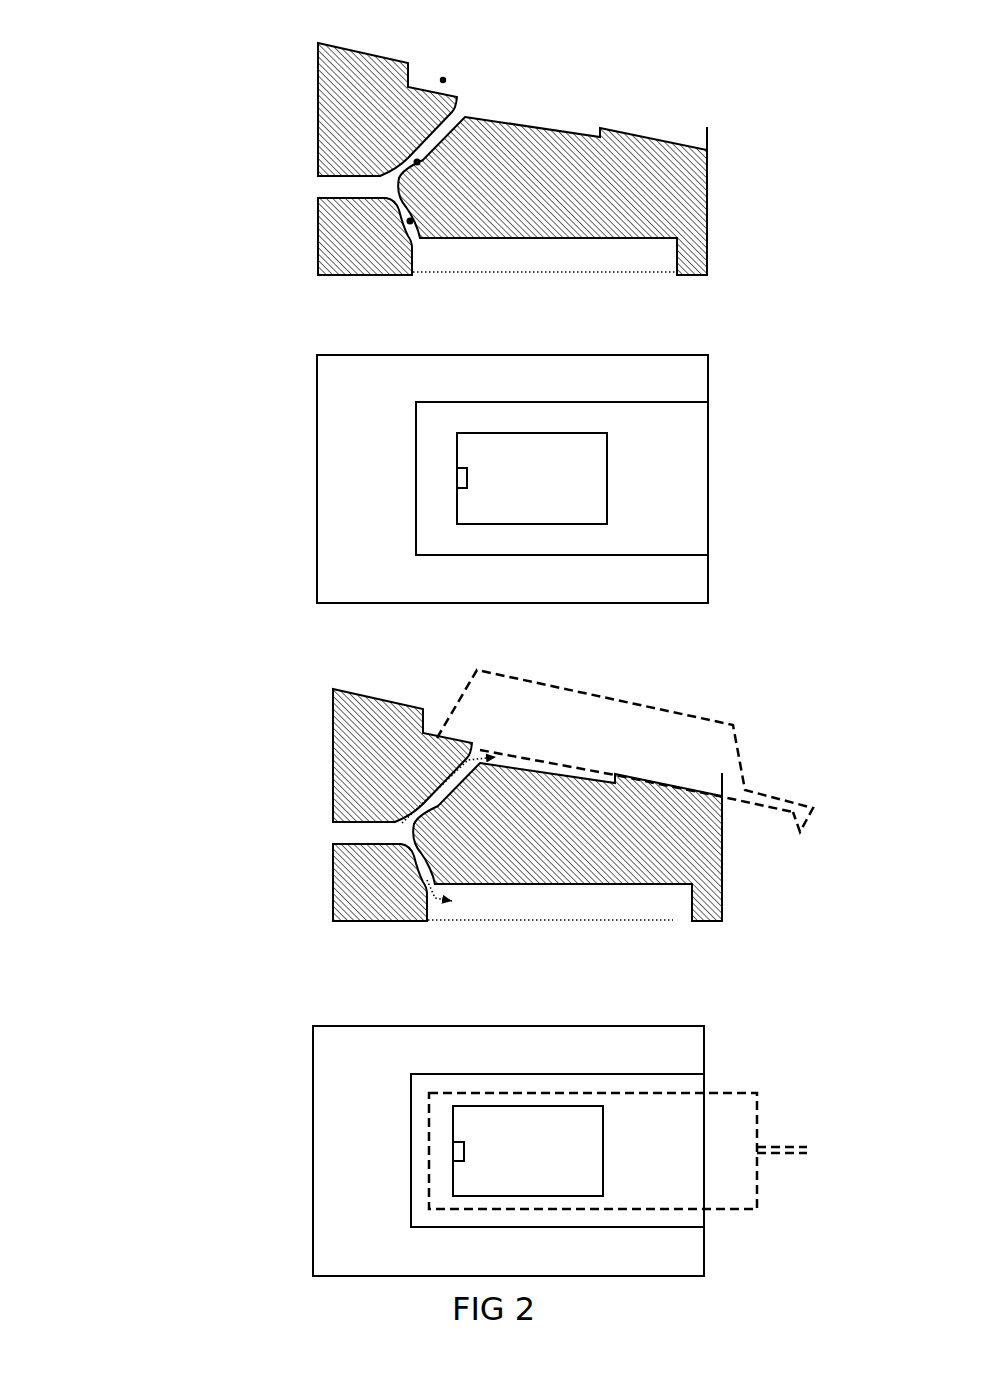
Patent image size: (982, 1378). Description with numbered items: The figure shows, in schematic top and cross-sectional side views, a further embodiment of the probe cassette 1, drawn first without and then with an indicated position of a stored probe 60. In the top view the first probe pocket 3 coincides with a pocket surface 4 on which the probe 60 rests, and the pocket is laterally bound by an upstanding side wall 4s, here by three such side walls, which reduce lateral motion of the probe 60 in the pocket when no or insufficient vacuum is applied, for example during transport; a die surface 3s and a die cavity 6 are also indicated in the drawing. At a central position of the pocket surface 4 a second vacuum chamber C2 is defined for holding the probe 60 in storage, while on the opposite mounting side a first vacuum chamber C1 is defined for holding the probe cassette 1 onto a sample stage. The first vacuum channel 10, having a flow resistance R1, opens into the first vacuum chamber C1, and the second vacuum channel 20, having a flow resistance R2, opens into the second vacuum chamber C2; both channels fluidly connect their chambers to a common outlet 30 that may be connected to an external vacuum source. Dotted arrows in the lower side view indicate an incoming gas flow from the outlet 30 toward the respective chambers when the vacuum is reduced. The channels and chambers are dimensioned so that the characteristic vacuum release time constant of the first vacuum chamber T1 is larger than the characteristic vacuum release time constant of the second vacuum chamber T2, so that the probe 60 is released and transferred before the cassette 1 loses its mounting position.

The probe cassette 1 is at (89, 546).
The first probe pocket 3 is at (656, 98).
The die surface 3s is at (446, 78).
The pocket surface 4 is at (691, 545).
The upstanding side wall 4s is at (416, 83).
The die cavity 6 is at (601, 521).
The first vacuum channel 10 is at (405, 220).
The second vacuum channel 20 is at (403, 160).
The outlet 30 is at (315, 182).
The probe 60 is at (700, 716).
The first vacuum chamber C1 is at (654, 263).
The second vacuum chamber C2 is at (560, 121).
The flow resistance of first vacuum channel R1 is at (412, 220).
The flow resistance of second vacuum channel R2 is at (419, 163).
The characteristic vacuum release time constant of the first vacuum chamber T1 is at (437, 868).
The characteristic vacuum release time constant of the second vacuum chamber T2 is at (452, 784).